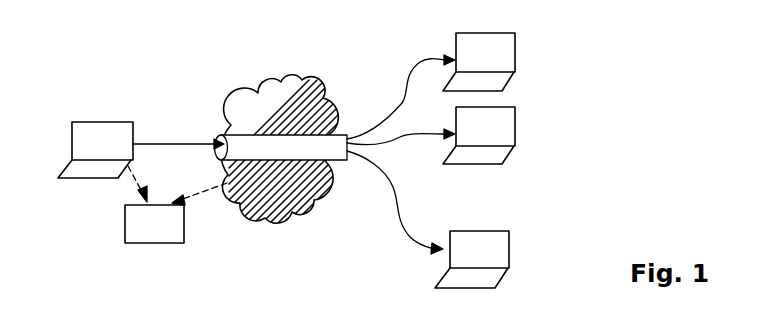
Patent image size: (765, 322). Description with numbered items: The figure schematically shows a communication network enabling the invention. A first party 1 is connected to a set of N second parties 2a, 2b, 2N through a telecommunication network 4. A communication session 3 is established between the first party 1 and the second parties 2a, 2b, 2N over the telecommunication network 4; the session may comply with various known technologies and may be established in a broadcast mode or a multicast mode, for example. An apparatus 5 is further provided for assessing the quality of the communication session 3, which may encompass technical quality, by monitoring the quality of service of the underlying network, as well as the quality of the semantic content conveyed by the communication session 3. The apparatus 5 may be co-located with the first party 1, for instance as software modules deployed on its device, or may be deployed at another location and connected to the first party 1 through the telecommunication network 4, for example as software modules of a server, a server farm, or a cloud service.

The first party 1 is at (133, 131).
The second party 2a is at (515, 62).
The second party 2b is at (515, 136).
The second party 2N is at (509, 262).
The communication session 3 is at (343, 160).
The telecommunication network 4 is at (312, 210).
The apparatus 5 is at (184, 232).